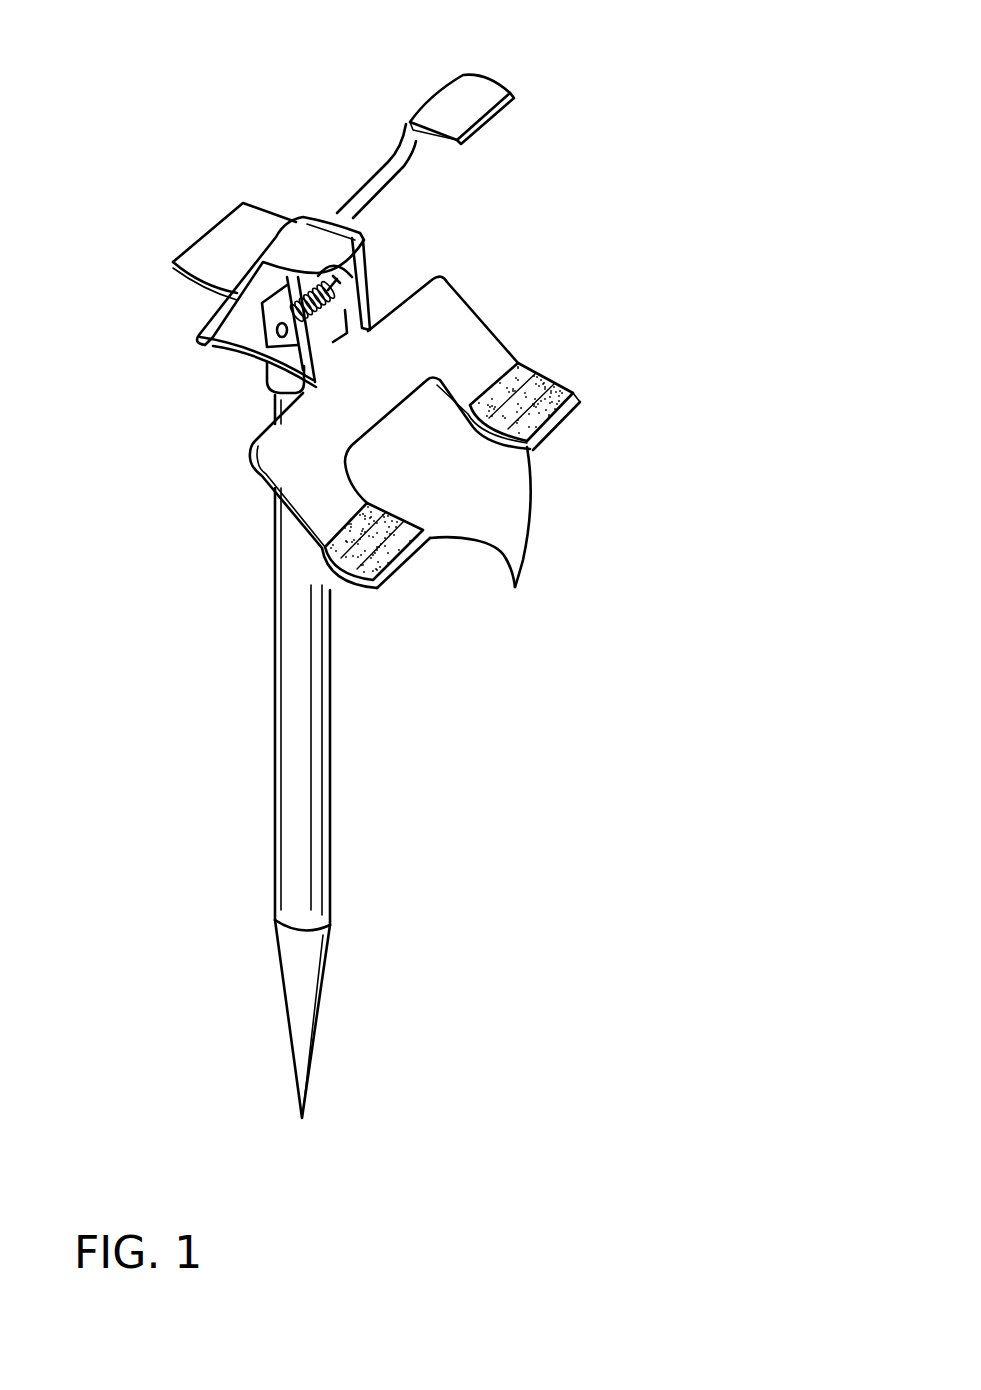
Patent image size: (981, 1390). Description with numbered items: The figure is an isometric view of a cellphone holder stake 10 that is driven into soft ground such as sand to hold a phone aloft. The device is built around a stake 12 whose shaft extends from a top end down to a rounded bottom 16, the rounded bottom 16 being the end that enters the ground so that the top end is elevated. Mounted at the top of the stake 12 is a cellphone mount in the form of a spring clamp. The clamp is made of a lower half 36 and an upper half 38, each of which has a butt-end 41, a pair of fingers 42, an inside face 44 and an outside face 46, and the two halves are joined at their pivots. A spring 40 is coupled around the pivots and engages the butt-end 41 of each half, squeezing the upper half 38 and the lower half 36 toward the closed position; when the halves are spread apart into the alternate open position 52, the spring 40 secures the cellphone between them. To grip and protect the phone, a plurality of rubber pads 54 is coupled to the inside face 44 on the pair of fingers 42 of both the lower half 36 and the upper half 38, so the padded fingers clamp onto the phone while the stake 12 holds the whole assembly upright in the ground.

The cellphone holder stake 10 is at (662, 183).
The stake 12 is at (320, 720).
The rounded bottom 16 is at (305, 1007).
The lower half 36 is at (407, 324).
The upper half 38 is at (378, 175).
The spring 40 is at (276, 384).
The butt-end 41 is at (222, 250).
The pair of fingers 42 is at (431, 536).
The inside face 44 is at (472, 330).
The outside face 46 is at (460, 98).
The alternate open position 52 is at (507, 88).
The rubber pads 54 is at (547, 397).